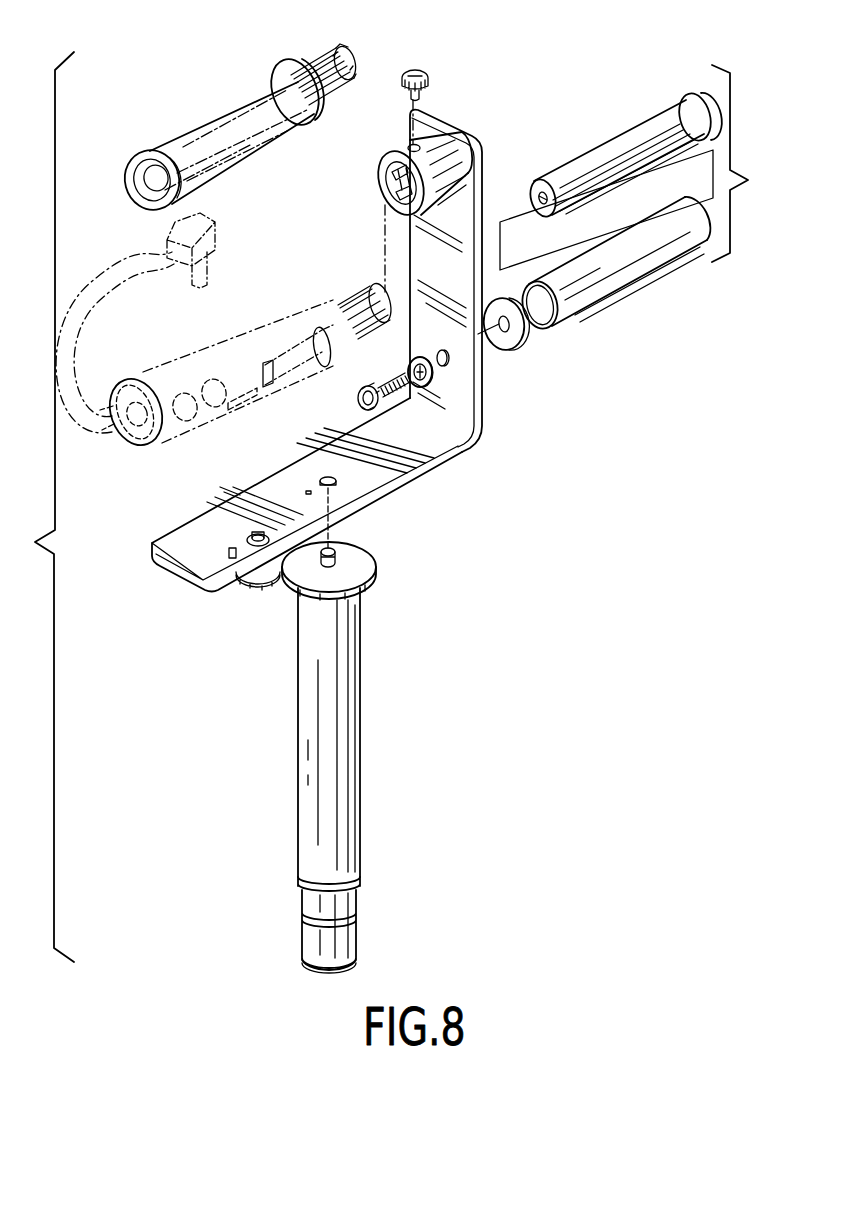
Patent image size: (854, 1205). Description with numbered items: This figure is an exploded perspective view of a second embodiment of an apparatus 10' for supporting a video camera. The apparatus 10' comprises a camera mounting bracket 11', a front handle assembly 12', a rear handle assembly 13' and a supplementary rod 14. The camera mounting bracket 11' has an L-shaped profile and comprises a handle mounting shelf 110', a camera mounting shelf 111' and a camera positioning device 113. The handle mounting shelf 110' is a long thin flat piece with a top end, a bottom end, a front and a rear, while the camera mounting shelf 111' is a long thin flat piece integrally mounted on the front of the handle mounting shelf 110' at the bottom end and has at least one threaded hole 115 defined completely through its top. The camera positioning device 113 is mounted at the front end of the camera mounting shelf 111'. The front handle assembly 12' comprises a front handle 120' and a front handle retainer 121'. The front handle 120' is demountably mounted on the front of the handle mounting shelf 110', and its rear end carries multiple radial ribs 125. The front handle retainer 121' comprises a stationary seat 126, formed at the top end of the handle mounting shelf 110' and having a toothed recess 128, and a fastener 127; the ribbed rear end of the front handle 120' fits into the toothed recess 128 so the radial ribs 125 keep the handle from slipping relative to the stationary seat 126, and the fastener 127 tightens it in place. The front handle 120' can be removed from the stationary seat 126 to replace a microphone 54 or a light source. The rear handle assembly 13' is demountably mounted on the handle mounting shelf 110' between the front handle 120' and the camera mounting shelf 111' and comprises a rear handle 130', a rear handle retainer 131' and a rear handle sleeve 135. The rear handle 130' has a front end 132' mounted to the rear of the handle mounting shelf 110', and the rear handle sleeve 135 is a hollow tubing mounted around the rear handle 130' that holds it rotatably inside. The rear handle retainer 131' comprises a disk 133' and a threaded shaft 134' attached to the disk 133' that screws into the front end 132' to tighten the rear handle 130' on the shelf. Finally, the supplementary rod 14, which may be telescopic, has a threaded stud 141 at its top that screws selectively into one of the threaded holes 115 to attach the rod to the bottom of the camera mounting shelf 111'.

The apparatus 10' is at (632, 188).
The camera mounting bracket 11' is at (353, 382).
The front handle assembly 12' is at (197, 481).
The rear handle assembly 13' is at (633, 167).
The supplementary rod 14 is at (356, 716).
The microphone 54 is at (283, 320).
The handle mounting shelf 110' is at (482, 281).
The camera mounting shelf 111' is at (314, 495).
The camera positioning device 113 is at (232, 598).
The threaded hole 115 is at (340, 482).
The front handle 120' is at (221, 134).
The front handle retainer 121' is at (366, 183).
The radial ribs 125 is at (312, 52).
The stationary seat 126 is at (408, 160).
The fastener 127 is at (427, 76).
The toothed recess 128 is at (380, 178).
The rear handle 130' is at (623, 155).
The rear handle retainer 131' is at (420, 398).
The front end 132' is at (522, 176).
The disk 133' is at (336, 402).
The threaded shaft 134' is at (378, 373).
The rear handle sleeve 135 is at (603, 287).
The threaded stud 141 is at (345, 563).